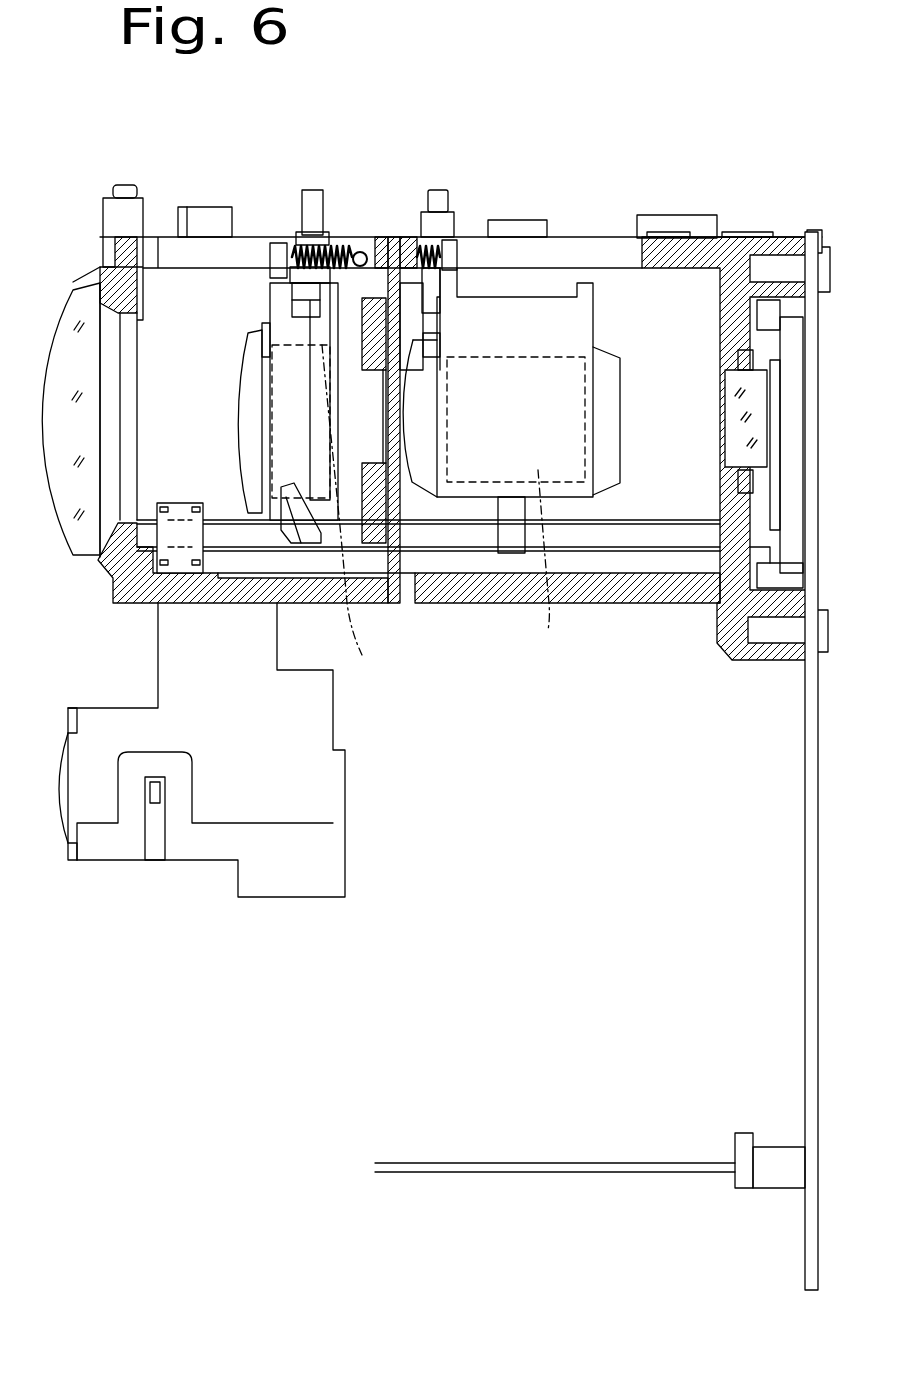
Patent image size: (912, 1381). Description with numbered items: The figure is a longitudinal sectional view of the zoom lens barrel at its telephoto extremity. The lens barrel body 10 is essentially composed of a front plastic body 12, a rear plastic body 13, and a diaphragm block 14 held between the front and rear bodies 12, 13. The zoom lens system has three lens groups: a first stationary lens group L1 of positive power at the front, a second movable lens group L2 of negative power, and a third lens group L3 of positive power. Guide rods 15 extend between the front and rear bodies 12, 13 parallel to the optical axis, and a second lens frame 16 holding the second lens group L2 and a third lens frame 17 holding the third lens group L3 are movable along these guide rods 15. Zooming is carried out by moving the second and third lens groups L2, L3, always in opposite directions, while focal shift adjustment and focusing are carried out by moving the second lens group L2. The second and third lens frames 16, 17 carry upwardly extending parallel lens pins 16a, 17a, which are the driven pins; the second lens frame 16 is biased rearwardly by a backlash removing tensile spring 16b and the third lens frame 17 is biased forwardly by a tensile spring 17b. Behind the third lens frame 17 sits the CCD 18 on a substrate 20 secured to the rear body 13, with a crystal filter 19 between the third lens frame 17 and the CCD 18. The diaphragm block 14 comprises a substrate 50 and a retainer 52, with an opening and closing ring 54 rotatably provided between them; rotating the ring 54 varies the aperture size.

The lens barrel body 10 is at (795, 225).
The front plastic body 12 is at (197, 603).
The rear plastic body 13 is at (700, 600).
The diaphragm block 14 is at (392, 603).
The guide rods 15 is at (630, 560).
The second lens frame 16 is at (250, 353).
The second lens pin 16a is at (310, 232).
The backlash removing tensile spring 16b is at (340, 247).
The third lens frame 17 is at (600, 405).
The third lens pin 17a is at (440, 197).
The tensile spring 17b is at (418, 232).
The CCD 18 is at (805, 448).
The crystal filter 19 is at (757, 393).
The substrate 20 is at (815, 772).
The substrate 50 is at (458, 238).
The retainer 52 is at (402, 353).
The opening and closing ring 54 is at (395, 317).
The first stationary lens group L1 is at (80, 527).
The second movable lens group L2 is at (353, 522).
The third lens group L3 is at (558, 570).